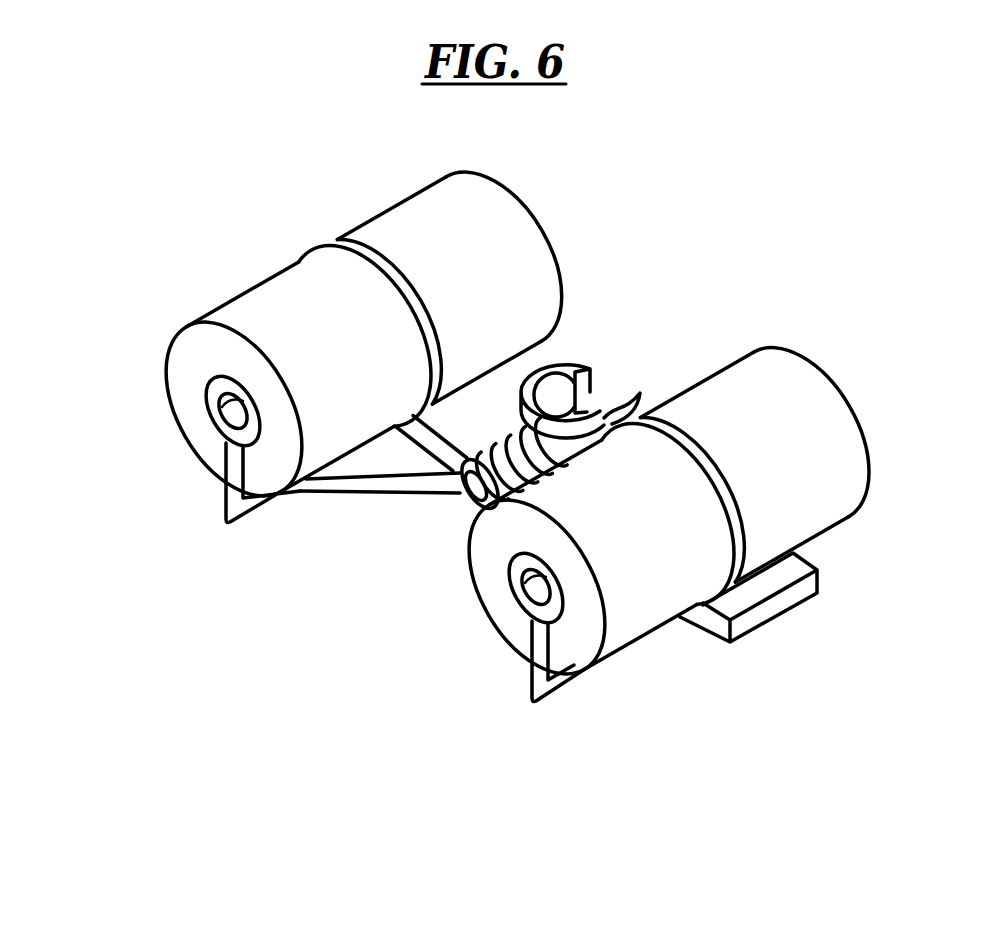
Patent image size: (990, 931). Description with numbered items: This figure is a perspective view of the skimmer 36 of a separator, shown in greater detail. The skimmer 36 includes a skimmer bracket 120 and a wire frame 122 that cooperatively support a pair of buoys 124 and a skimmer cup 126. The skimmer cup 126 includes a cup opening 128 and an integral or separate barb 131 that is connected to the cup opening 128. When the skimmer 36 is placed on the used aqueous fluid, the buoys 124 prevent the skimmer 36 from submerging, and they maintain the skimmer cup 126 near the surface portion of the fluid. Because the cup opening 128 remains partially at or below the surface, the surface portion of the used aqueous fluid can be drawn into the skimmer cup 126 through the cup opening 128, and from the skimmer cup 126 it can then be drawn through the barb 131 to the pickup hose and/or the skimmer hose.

The skimmer 36 is at (798, 269).
The skimmer bracket 120 is at (783, 603).
The wire frame 122 is at (228, 524).
The buoys 124 is at (258, 307).
The skimmer cup 126 is at (567, 365).
The cup opening 128 is at (612, 386).
The barb 131 is at (493, 470).